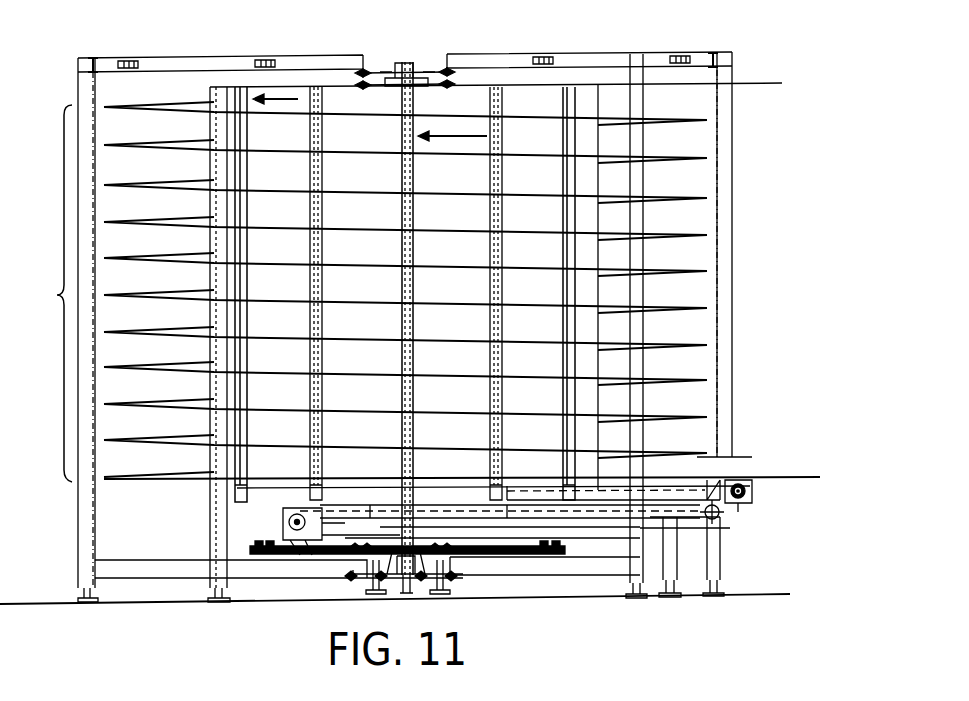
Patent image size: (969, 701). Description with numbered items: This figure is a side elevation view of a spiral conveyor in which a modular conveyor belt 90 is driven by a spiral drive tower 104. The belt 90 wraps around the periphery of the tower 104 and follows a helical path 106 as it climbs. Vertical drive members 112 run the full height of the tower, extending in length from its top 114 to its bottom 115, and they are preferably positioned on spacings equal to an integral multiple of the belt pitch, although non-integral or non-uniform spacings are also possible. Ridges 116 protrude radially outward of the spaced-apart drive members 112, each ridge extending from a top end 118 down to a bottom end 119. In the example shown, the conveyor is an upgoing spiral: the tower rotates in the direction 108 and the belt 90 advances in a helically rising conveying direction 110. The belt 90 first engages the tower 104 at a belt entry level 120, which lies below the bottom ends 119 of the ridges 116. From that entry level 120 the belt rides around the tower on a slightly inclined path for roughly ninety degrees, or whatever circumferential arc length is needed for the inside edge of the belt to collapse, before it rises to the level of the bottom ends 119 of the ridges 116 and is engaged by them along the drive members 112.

The conveyor belt 90 is at (177, 484).
The spiral drive tower 104 is at (533, 92).
The helical path 106 is at (50, 293).
The direction 108 is at (279, 98).
The conveying direction 110 is at (453, 136).
The vertical drive members 112 is at (573, 333).
The top 114 is at (590, 83).
The bottom 115 is at (233, 520).
The ridges 116 is at (573, 184).
The top ends 118 is at (242, 100).
The bottom ends 119 is at (573, 473).
The belt entry level 120 is at (808, 478).